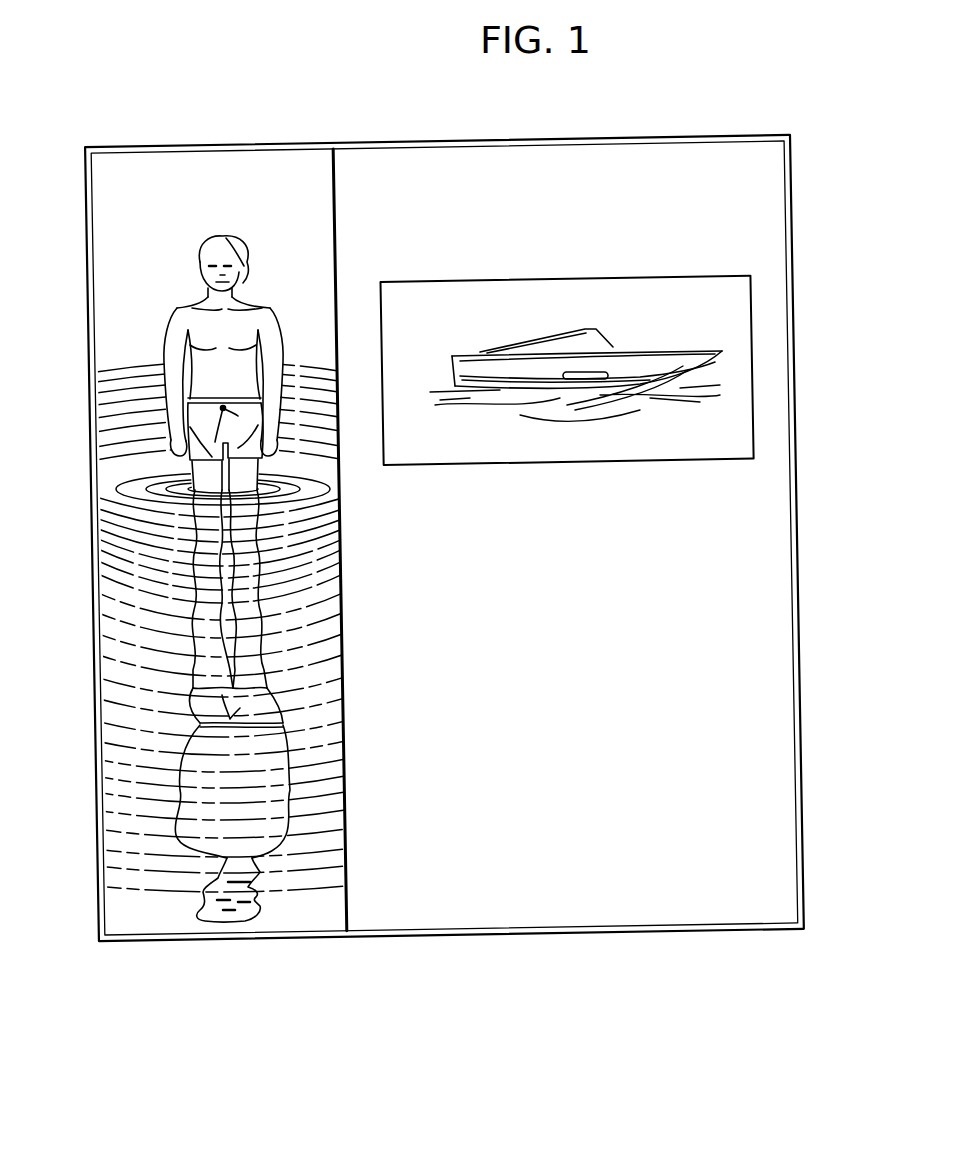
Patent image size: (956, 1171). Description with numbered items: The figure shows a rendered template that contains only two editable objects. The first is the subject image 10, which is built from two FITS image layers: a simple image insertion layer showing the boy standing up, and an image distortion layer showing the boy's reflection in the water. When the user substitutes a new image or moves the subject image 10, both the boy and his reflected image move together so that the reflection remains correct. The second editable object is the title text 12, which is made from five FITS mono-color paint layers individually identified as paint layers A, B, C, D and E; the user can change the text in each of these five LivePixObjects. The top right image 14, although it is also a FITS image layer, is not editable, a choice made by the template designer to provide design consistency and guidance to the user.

The subject image 10 is at (116, 401).
The title text 12 is at (729, 212).
The top right image 14 is at (743, 320).
The mono-color paint layer A is at (629, 172).
The mono-color paint layer B is at (729, 515).
The mono-color paint layer C is at (622, 515).
The mono-color paint layer D is at (521, 513).
The mono-color paint layer E is at (418, 513).